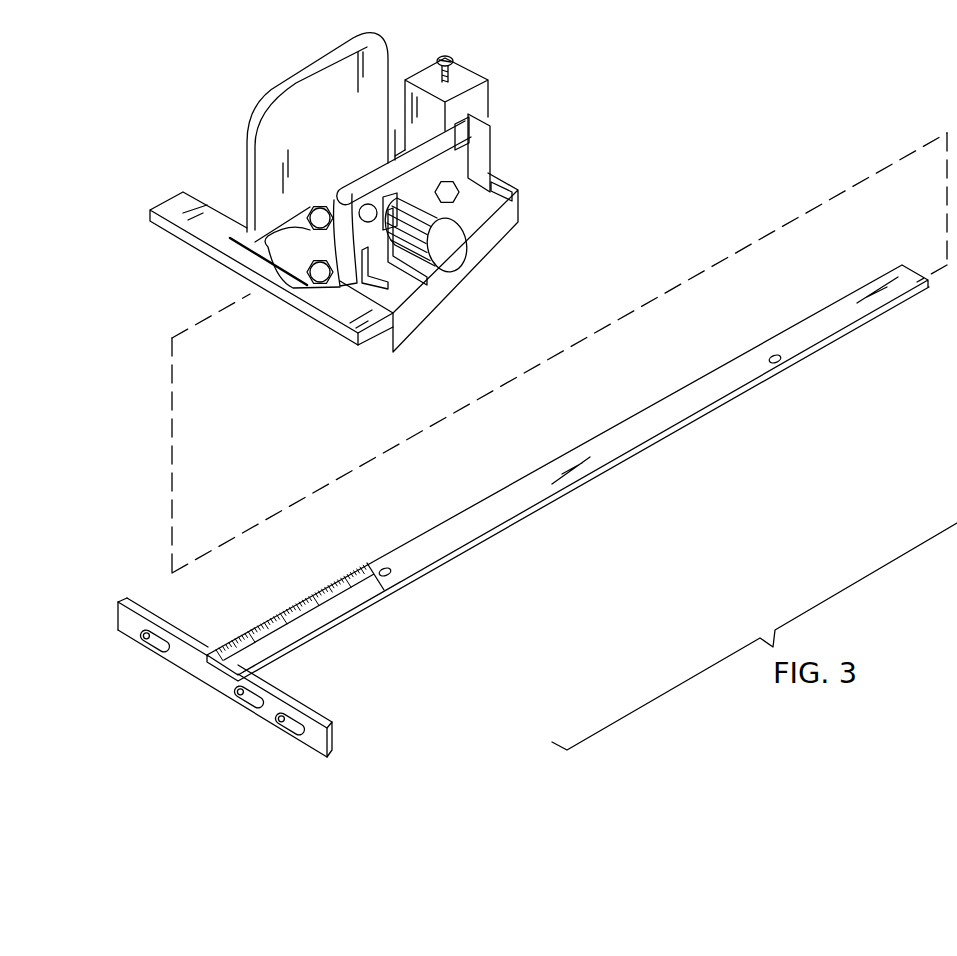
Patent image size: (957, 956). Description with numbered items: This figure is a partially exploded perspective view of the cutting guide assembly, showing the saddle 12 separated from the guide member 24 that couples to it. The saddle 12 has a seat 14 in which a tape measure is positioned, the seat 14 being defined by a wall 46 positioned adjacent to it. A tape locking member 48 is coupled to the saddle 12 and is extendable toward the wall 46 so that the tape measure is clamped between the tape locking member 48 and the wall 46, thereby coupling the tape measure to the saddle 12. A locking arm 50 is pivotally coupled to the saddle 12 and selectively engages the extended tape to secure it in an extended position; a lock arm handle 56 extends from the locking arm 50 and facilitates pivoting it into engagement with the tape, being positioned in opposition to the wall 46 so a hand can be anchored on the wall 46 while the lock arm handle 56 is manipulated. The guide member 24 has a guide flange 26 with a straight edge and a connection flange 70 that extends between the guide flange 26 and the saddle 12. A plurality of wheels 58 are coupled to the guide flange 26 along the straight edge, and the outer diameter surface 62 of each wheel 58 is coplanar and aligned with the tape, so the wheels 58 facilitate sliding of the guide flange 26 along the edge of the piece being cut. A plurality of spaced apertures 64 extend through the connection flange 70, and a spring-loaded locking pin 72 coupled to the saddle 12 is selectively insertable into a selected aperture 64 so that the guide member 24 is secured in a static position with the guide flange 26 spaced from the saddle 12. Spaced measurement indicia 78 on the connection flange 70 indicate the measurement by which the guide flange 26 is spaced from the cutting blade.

The saddle 12 is at (473, 264).
The seat 14 is at (349, 165).
The guide member 24 is at (503, 528).
The guide flange 26 is at (336, 746).
The wall 46 is at (268, 118).
The tape locking member 48 is at (443, 258).
The locking arm 50 is at (285, 250).
The lock arm handle 56 is at (453, 165).
The wheels 58 is at (151, 652).
The outer diameter surface 62 is at (148, 643).
The spaced apertures 64 is at (778, 359).
The connection flange 70 is at (520, 508).
The spring-loaded locking pin 72 is at (458, 58).
The measurement indicia 78 is at (293, 607).